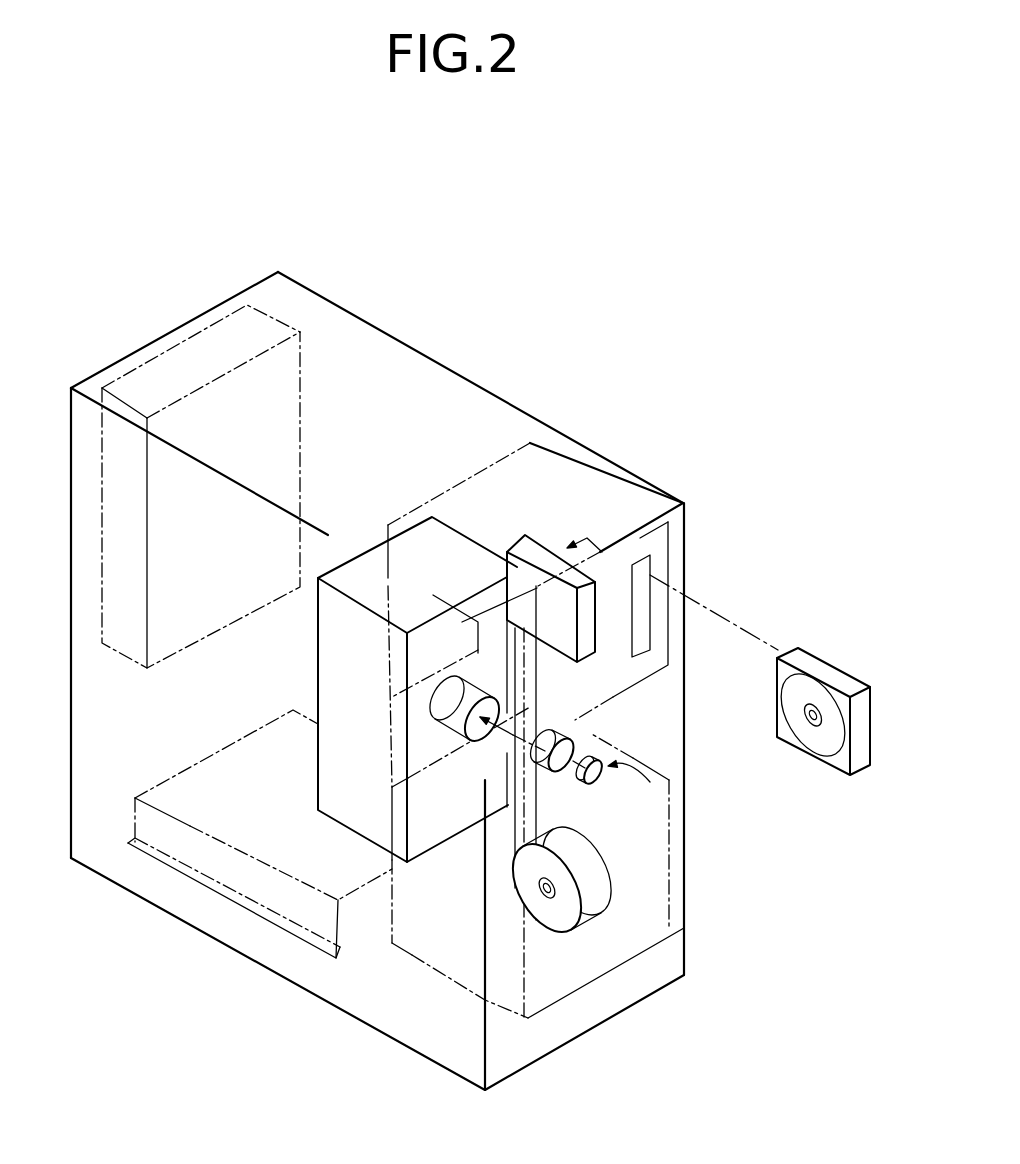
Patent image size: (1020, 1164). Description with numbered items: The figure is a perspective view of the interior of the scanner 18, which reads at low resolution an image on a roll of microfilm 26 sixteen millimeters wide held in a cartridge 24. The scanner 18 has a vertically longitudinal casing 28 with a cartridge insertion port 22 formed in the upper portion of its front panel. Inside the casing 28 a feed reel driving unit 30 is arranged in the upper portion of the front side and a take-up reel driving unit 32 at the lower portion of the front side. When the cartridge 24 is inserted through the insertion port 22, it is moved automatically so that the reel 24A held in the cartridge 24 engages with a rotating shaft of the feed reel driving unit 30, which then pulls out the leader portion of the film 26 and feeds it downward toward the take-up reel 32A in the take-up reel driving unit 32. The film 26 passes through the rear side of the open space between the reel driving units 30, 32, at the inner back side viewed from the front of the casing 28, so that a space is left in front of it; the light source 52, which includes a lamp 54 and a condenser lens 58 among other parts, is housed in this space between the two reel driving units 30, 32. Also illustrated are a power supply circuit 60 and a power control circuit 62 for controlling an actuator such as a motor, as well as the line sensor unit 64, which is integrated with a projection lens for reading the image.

The scanner 18 is at (440, 357).
The cartridge insertion port 22 is at (645, 563).
The cartridge 24 is at (834, 720).
The reel 24A is at (822, 745).
The roll of microfilm 26 is at (520, 840).
The casing 28 is at (300, 280).
The feed reel driving unit 30 is at (570, 467).
The take-up reel driving unit 32 is at (670, 947).
The take-up reel 32A is at (563, 913).
The light source 52 is at (623, 755).
The lamp 54 is at (607, 772).
The condenser lens 58 is at (505, 733).
The power supply circuit 60 is at (300, 377).
The power control circuit 62 is at (135, 830).
The line sensor unit 64 is at (447, 527).